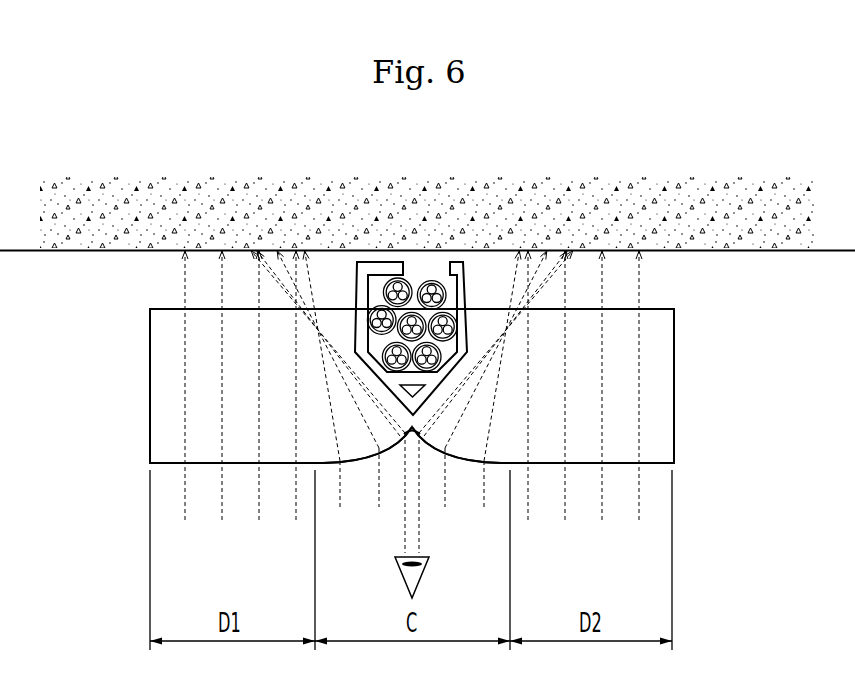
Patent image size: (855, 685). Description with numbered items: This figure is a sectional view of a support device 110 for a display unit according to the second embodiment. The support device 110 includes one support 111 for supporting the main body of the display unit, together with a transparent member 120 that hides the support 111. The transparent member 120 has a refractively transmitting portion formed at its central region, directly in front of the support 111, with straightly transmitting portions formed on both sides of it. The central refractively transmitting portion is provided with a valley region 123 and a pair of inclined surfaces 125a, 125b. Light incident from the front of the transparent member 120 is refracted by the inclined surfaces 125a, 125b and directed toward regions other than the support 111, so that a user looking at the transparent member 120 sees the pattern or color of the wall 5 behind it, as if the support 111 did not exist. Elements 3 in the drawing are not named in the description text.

The wall 5 is at (148, 252).
The support device 110 is at (127, 440).
The transparent member 120 is at (160, 382).
The support 111 is at (362, 277).
The light sources (LEDs) 3 is at (433, 277).
The valley region 123 is at (412, 432).
The inclined surface 125a is at (368, 459).
The inclined surface 125b is at (454, 457).